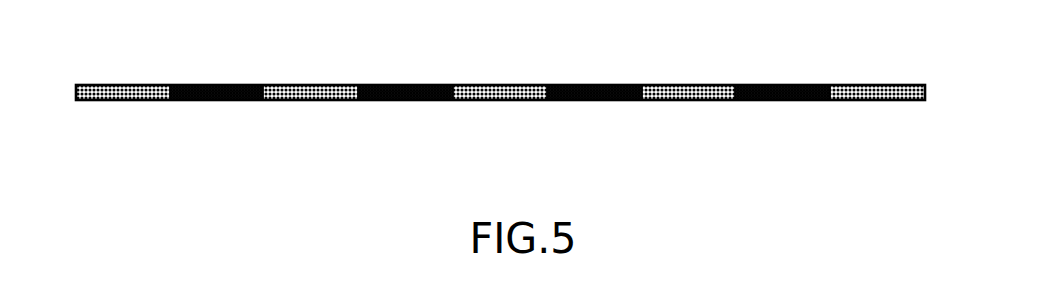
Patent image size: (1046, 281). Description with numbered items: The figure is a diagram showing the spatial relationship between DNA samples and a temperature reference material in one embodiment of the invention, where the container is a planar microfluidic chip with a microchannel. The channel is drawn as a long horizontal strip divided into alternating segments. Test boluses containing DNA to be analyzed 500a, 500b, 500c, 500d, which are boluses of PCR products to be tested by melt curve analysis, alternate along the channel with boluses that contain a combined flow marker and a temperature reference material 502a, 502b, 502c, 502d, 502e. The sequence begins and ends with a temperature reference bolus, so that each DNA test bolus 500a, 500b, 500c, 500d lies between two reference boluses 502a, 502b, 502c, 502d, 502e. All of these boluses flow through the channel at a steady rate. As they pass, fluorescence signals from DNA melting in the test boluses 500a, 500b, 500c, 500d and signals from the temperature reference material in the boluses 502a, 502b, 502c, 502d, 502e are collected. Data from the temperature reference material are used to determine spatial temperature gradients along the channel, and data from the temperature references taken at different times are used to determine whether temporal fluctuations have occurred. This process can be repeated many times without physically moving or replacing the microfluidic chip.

The test bolus 500a is at (222, 92).
The test bolus 500b is at (405, 92).
The test bolus 500c is at (600, 92).
The test bolus 500d is at (783, 92).
The bolus containing combined flow marker and temperature reference material 502a is at (117, 95).
The bolus containing combined flow marker and temperature reference material 502b is at (317, 95).
The bolus containing combined flow marker and temperature reference material 502c is at (513, 95).
The bolus containing combined flow marker and temperature reference material 502d is at (693, 95).
The bolus containing combined flow marker and temperature reference material 502e is at (883, 95).